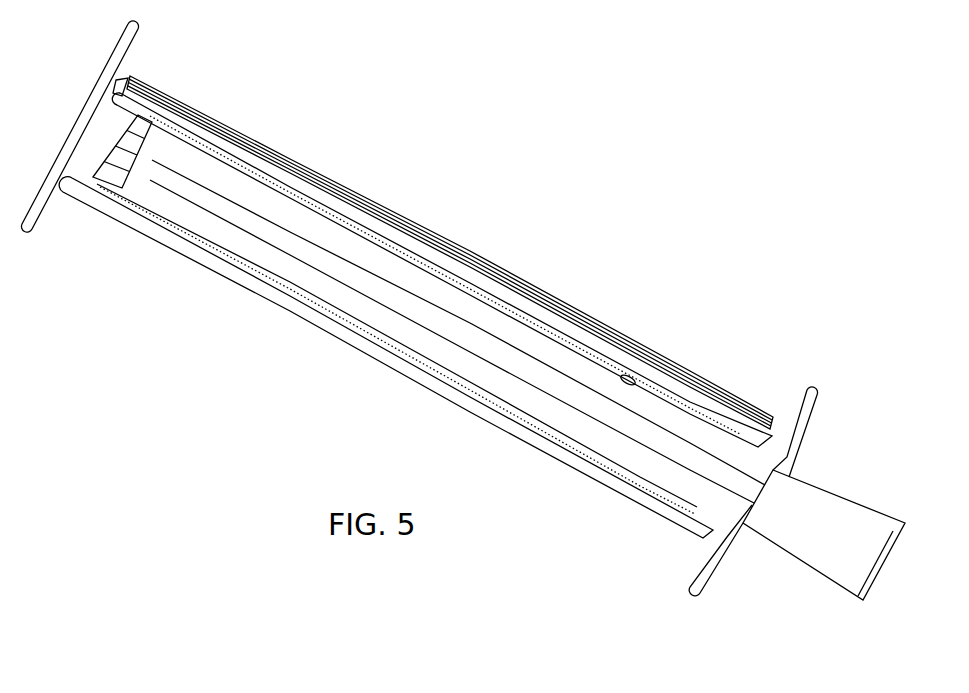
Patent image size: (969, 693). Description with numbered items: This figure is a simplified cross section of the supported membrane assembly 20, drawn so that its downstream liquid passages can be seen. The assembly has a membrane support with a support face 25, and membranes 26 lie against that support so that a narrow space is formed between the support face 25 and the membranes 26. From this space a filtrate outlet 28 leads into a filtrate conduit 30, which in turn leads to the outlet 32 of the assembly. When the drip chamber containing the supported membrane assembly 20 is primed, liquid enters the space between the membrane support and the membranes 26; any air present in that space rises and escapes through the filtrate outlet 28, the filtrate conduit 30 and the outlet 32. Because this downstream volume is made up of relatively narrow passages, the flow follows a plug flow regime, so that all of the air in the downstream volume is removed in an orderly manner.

The supported membrane assembly 20 is at (396, 279).
The support face 25 is at (638, 382).
The membrane 26 is at (494, 292).
The filtrate outlet 28 is at (157, 113).
The filtrate conduit 30 is at (292, 238).
The outlet 32 is at (817, 480).